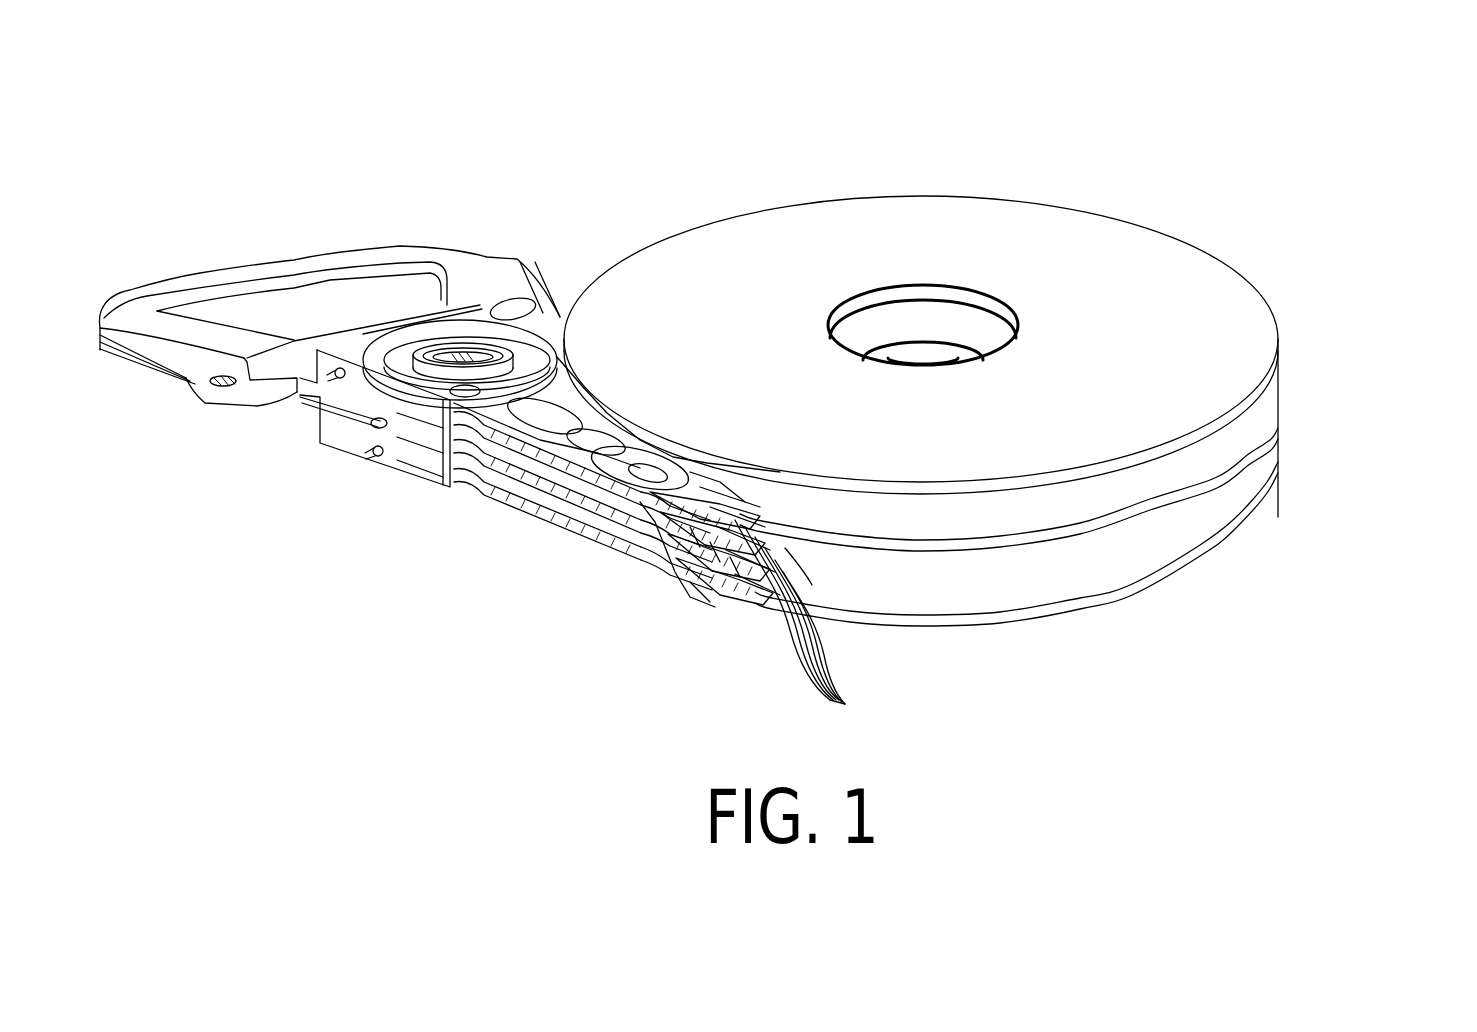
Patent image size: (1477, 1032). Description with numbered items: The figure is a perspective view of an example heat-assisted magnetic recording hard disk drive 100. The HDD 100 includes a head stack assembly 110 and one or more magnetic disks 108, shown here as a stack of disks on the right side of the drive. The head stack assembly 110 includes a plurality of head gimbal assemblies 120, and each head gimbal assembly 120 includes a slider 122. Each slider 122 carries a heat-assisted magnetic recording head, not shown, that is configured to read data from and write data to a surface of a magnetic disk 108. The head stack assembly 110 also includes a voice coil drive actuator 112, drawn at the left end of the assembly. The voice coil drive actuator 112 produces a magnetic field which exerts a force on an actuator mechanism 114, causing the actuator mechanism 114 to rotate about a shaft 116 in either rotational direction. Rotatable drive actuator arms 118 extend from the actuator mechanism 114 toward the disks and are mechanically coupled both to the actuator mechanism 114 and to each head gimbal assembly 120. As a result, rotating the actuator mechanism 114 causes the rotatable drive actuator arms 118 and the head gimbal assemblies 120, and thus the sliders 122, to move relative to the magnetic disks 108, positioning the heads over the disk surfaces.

The hard disk drive 100 is at (1280, 144).
The magnetic disks 108 is at (1096, 206).
The head stack assembly 110 is at (602, 628).
The voice coil drive actuator 112 is at (259, 246).
The actuator mechanism 114 is at (550, 270).
The shaft 116 is at (467, 348).
The rotatable drive actuator arms 118 is at (489, 478).
The head gimbal assemblies 120 is at (748, 494).
The slider 122 is at (812, 615).